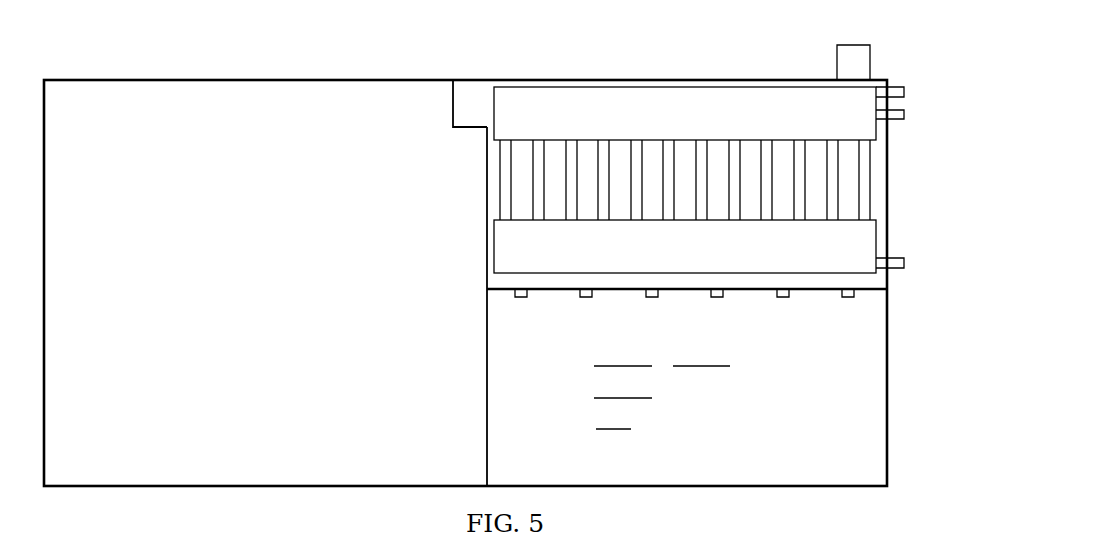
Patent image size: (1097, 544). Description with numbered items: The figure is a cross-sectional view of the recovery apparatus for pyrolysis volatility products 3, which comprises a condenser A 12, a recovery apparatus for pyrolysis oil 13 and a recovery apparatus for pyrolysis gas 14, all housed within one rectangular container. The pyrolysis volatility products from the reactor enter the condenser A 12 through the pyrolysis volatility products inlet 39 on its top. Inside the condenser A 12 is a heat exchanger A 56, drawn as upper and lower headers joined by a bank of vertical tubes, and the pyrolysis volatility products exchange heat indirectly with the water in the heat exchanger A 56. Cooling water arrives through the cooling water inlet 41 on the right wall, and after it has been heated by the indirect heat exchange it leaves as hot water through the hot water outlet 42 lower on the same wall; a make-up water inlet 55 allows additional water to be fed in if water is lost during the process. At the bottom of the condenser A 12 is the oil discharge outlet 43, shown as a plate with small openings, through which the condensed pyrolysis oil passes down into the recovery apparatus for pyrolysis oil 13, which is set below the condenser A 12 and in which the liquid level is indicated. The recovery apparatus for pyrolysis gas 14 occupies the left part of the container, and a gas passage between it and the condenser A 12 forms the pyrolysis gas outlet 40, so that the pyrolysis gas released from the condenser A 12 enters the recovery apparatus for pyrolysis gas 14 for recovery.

The recovery apparatus for pyrolysis volatility products 3 is at (124, 80).
The recovery apparatus for pyrolysis gas 14 is at (268, 106).
The pyrolysis gas outlet 40 is at (474, 95).
The heat exchanger A 56 is at (752, 95).
The condenser A 12 is at (878, 213).
The pyrolysis volatility products inlet 39 is at (863, 48).
The cooling water inlet 41 is at (904, 90).
The make-up water inlet 55 is at (905, 113).
The hot water outlet 42 is at (906, 259).
The oil discharge outlet 43 is at (852, 292).
The recovery apparatus for pyrolysis oil 13 is at (870, 453).